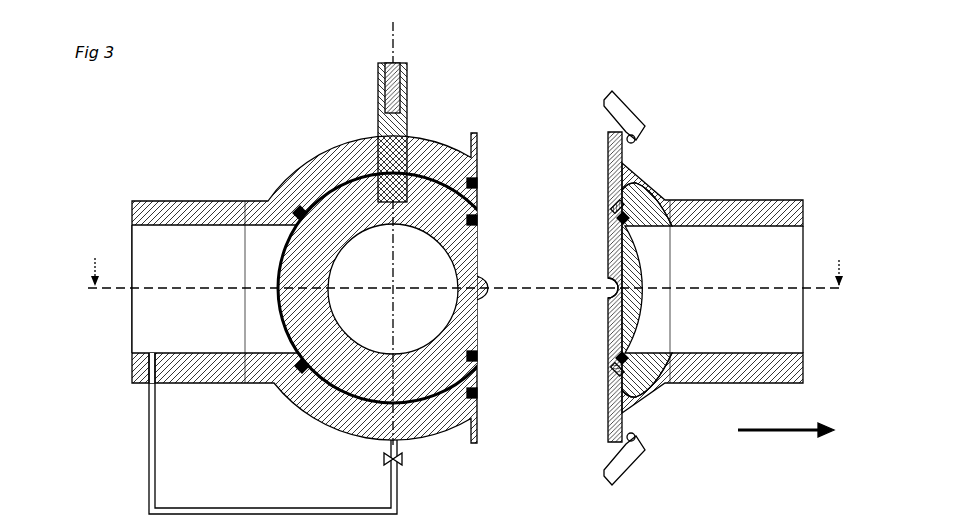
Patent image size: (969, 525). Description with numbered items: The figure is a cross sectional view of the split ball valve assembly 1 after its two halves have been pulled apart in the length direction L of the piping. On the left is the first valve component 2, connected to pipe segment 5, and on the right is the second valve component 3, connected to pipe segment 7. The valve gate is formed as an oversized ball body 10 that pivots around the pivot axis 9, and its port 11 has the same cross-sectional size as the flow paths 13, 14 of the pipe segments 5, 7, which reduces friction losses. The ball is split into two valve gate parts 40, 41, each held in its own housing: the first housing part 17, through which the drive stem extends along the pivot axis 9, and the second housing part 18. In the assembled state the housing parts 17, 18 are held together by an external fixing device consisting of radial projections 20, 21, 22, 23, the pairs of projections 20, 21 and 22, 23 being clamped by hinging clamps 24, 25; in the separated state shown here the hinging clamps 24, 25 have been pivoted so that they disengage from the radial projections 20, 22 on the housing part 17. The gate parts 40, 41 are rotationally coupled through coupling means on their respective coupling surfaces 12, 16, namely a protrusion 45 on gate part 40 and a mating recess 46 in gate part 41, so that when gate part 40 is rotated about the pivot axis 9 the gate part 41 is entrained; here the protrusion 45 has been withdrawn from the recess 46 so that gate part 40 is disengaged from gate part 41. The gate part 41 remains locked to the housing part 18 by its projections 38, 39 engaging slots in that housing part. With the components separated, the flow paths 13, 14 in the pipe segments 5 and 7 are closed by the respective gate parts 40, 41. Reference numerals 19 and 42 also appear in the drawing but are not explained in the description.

The valve assembly 1 is at (664, 76).
The first valve component 2 is at (284, 134).
The second valve component 3 is at (772, 126).
The pipe segment 5 is at (140, 381).
The pipe segment 7 is at (712, 303).
The pivot axis 9 is at (398, 46).
The body 10 is at (357, 288).
The port 11 is at (332, 245).
The coupling surface 12 is at (290, 312).
The flow path 13 is at (183, 333).
The flow path 14 is at (735, 303).
The coupling surface 16 is at (608, 243).
The first housing part 17 is at (345, 145).
The second housing part 18 is at (627, 378).
The ball surface 19 is at (277, 265).
The radial projection 20 is at (477, 145).
The radial projection 21 is at (580, 296).
The radial projection 22 is at (477, 440).
The radial projection 23 is at (608, 440).
The hinging clamp 24 is at (632, 118).
The hinging clamp 25 is at (633, 455).
The projection 38 is at (632, 184).
The projection 39 is at (636, 382).
The valve gate part 40 is at (307, 395).
The valve gate part 41 is at (657, 271).
The weld seam 42 is at (364, 420).
The protrusion 45 is at (488, 291).
The recess 46 is at (608, 290).